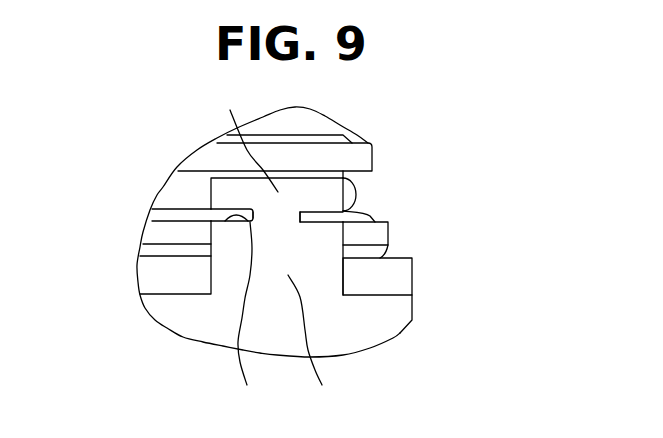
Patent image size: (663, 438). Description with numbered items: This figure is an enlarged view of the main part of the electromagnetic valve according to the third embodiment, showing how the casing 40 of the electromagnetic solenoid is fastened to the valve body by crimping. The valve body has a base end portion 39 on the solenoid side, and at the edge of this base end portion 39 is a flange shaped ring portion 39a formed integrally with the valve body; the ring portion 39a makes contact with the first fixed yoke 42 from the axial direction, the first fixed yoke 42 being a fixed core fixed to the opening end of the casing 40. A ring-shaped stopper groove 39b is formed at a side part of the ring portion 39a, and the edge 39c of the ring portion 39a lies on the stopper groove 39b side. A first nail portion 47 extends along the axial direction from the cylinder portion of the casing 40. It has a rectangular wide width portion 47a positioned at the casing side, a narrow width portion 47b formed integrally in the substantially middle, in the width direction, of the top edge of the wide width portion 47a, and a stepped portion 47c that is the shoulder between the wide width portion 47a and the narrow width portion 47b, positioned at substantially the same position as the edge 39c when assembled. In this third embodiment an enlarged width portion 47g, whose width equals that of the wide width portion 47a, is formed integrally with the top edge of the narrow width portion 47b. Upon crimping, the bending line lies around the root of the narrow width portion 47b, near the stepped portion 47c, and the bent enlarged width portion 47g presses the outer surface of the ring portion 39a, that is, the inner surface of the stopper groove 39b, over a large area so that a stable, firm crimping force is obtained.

The base end portion 39 is at (376, 157).
The ring portion 39a is at (370, 233).
The stopper groove 39b is at (185, 198).
The edge 39c is at (370, 216).
The casing 40 is at (367, 328).
The first fixed yoke 42 is at (398, 280).
The first nail portion 47 is at (201, 272).
The wide width portion 47a is at (324, 345).
The narrow width portion 47b is at (280, 219).
The stepped portion 47c is at (251, 315).
The enlarged width portion 47g is at (245, 138).